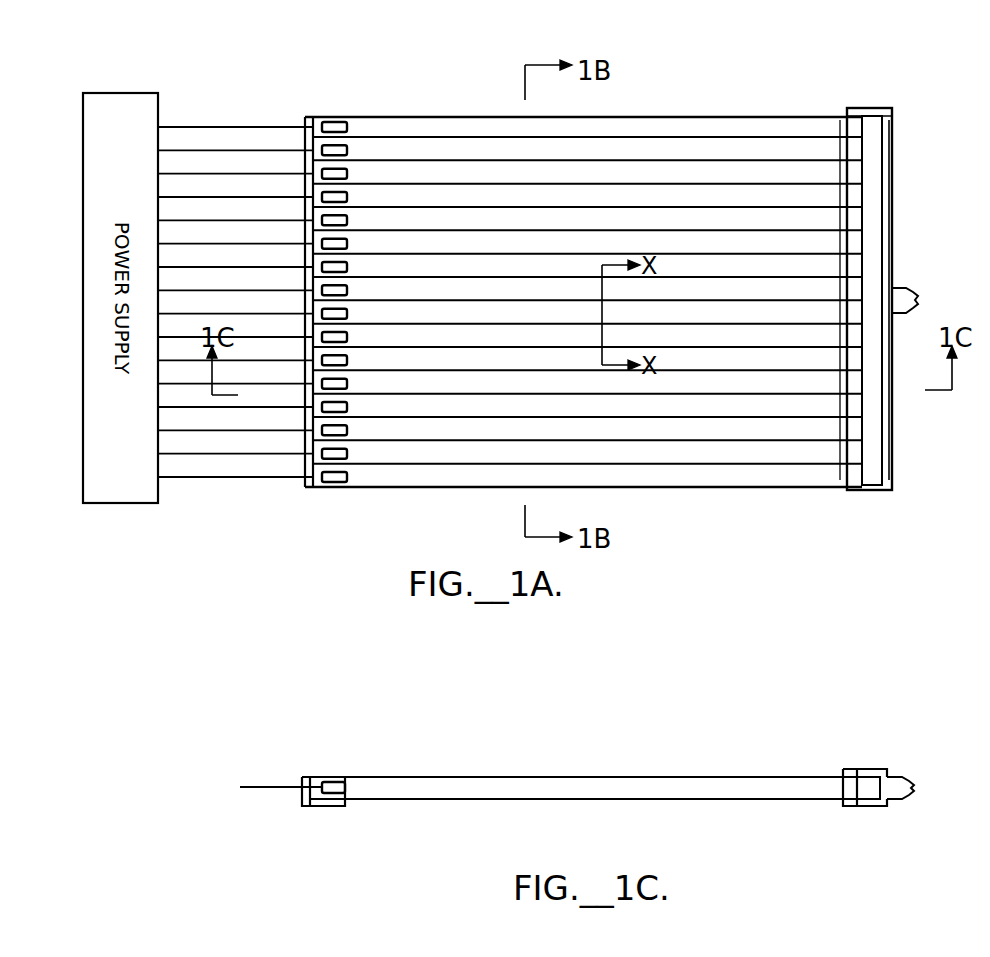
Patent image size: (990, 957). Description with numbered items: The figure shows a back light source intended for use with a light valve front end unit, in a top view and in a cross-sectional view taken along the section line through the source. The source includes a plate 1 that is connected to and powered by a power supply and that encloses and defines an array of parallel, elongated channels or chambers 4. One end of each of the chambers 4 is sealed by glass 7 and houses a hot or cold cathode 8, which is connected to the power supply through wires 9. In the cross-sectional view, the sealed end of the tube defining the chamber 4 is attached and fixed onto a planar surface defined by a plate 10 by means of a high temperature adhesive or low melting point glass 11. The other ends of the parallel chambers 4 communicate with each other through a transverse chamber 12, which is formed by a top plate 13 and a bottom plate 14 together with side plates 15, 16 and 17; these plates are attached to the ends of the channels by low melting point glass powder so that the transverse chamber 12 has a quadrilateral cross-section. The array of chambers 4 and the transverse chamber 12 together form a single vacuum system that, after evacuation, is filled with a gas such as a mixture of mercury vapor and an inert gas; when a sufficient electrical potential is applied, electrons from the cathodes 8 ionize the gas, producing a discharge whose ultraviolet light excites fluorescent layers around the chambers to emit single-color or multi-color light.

In FIG. 1A, the plate 1 is at (697, 88).
In FIG. 1A, the channels or chambers 4 is at (495, 145).
In FIG. 1C, the channels or chambers 4 is at (555, 775).
In FIG. 1A, the glass 7 is at (305, 117).
In FIG. 1A, the hot or cold cathode 8 is at (335, 122).
In FIG. 1C, the hot or cold cathode 8 is at (333, 785).
In FIG. 1A, the wires 9 is at (253, 195).
In FIG. 1C, the wires 9 is at (280, 780).
In FIG. 1C, the plate 10 is at (325, 806).
In FIG. 1C, the high temperature adhesive or low melting point glass 11 is at (345, 806).
In FIG. 1A, the transverse chamber 12 is at (872, 226).
In FIG. 1C, the transverse chamber 12 is at (872, 786).
In FIG. 1C, the top plate 13 is at (865, 775).
In FIG. 1C, the bottom plate 14 is at (865, 800).
In FIG. 1A, the side plate 15 is at (888, 404).
In FIG. 1A, the side plate 16 is at (870, 490).
In FIG. 1A, the side plate 17 is at (875, 108).